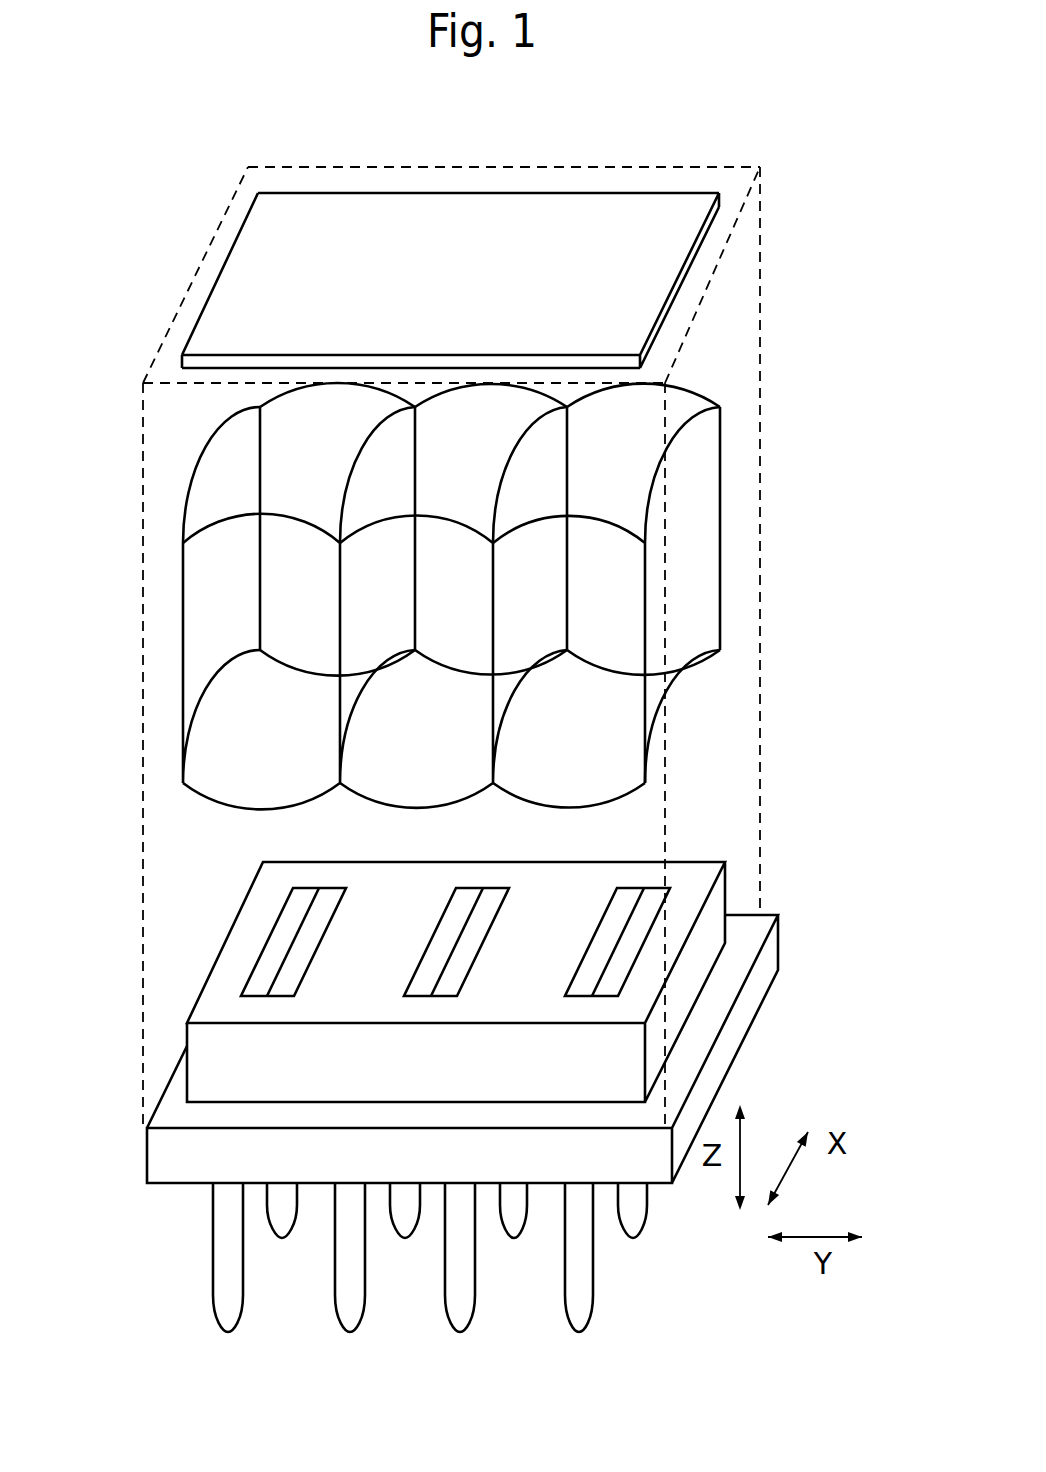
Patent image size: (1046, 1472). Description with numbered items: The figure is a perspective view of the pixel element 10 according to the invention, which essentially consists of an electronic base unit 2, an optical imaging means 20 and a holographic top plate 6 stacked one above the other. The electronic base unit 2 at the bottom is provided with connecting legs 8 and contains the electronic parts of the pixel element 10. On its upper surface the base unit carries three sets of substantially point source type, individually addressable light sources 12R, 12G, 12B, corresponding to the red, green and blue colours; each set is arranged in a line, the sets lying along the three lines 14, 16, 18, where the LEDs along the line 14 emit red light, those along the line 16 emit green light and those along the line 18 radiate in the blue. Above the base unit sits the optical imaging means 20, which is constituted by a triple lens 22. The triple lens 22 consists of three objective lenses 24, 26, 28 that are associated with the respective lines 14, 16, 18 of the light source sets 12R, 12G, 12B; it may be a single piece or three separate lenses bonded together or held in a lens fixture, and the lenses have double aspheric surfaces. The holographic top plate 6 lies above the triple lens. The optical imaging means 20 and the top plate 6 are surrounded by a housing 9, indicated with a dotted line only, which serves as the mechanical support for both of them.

The electronic base unit 2 is at (713, 1008).
The holographic top plate 6 is at (678, 206).
The connecting legs 8 is at (580, 1263).
The housing 9 is at (760, 286).
The pixel element 10 is at (817, 796).
The set of red light sources 12R is at (251, 928).
The set of green light sources 12G is at (489, 978).
The set of blue light sources 12B is at (699, 897).
The line of red light sources 14 is at (293, 940).
The line of green light sources 16 is at (455, 942).
The line of blue light sources 18 is at (617, 938).
The optical imaging means 20 is at (750, 595).
The triple lens 22 is at (170, 635).
The first objective lens 24 is at (270, 810).
The second objective lens 26 is at (415, 810).
The third objective lens 28 is at (567, 808).